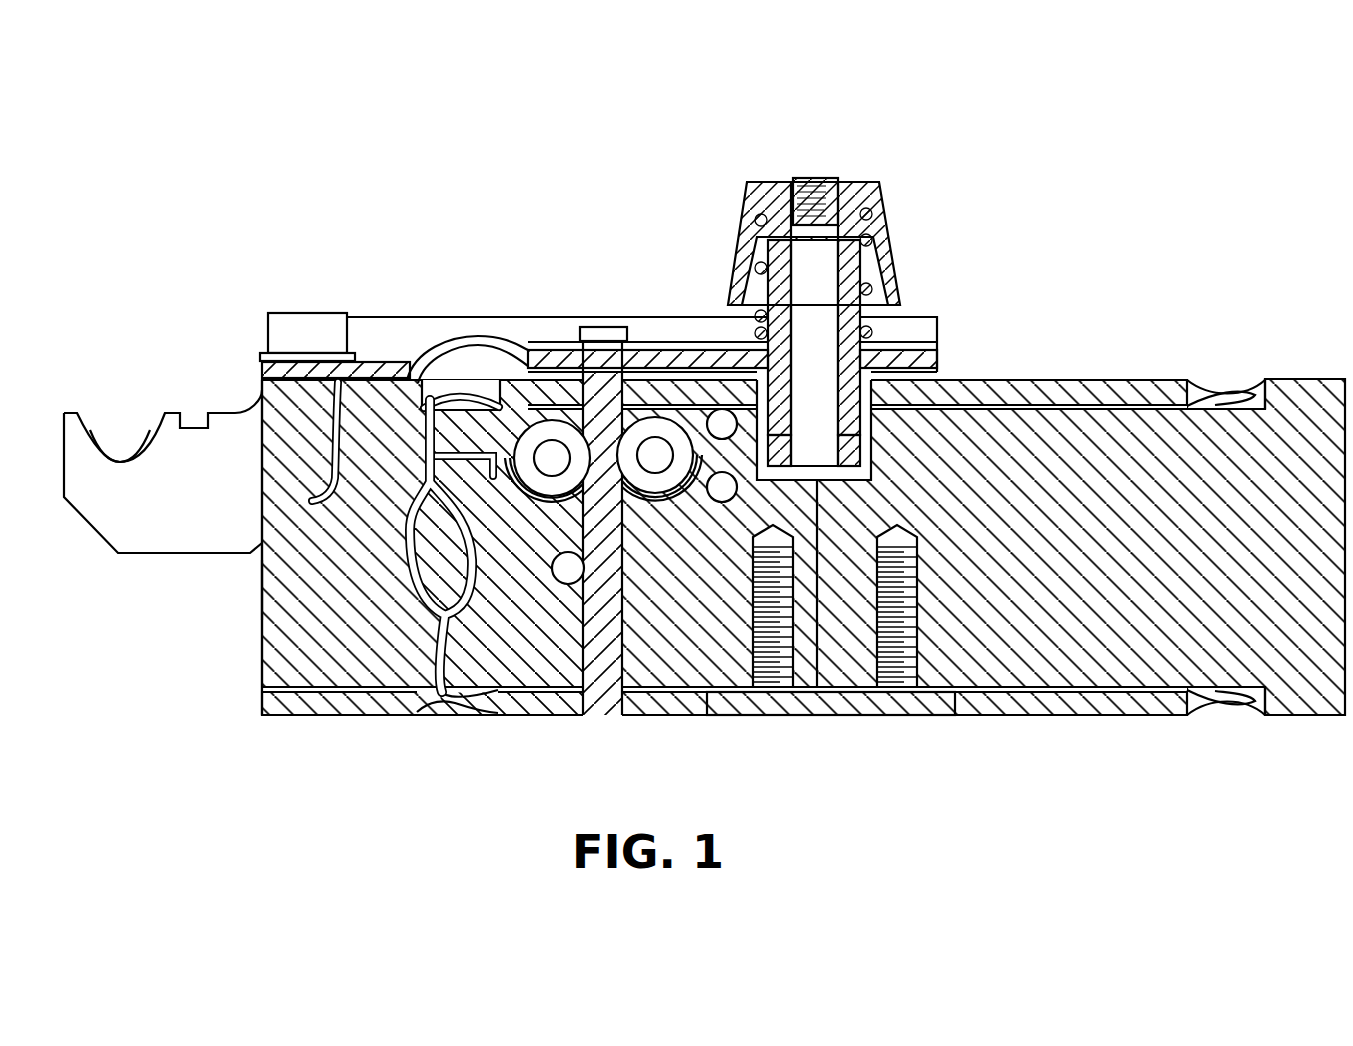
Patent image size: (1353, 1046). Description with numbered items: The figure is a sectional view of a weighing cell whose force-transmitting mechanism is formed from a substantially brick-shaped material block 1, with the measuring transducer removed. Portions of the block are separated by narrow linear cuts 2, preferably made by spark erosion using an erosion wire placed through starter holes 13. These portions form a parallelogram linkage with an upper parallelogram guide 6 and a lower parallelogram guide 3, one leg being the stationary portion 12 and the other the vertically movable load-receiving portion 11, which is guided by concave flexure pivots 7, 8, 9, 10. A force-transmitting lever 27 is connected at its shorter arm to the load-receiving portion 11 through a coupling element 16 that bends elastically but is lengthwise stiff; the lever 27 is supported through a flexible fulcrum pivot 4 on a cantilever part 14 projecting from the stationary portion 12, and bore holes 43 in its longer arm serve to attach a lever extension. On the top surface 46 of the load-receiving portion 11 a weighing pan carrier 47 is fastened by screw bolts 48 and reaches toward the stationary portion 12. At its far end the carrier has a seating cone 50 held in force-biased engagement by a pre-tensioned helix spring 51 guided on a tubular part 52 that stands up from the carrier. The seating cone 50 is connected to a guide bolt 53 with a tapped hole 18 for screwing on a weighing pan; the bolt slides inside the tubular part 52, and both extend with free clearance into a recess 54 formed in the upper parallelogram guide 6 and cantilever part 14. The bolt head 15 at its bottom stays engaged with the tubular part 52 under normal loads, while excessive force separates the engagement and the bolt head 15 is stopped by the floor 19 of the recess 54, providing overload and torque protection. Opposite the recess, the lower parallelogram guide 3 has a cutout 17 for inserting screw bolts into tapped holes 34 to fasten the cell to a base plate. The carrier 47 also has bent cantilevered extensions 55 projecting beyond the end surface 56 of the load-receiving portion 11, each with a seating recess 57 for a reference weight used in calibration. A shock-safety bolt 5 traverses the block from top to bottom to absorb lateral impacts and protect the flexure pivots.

The material block 1 is at (1110, 733).
The narrow linear cuts 2 is at (1083, 398).
The lower parallelogram guide 3 is at (1057, 703).
The flexible fulcrum pivot 4 is at (503, 452).
The shock-safety bolt 5 is at (604, 338).
The upper parallelogram guide 6 is at (1116, 404).
The flexure pivot 7 is at (455, 714).
The flexure pivot 8 is at (1225, 705).
The flexure pivot 9 is at (1238, 390).
The flexure pivot 10 is at (452, 392).
The load-receiving portion 11 is at (340, 630).
The stationary portion 12 is at (1303, 372).
The starter holes 13 is at (722, 422).
The cantilever part 14 is at (1130, 487).
The bolt head 15 is at (872, 476).
The coupling element 16 is at (430, 592).
The cutout 17 is at (855, 703).
The tapped hole 18 is at (818, 180).
The floor 19 is at (817, 716).
The force-transmitting lever 27 is at (483, 420).
The tapped holes 34 is at (777, 662).
The bore holes 43 is at (553, 455).
The top surface 46 is at (266, 371).
The weighing pan carrier 47 is at (401, 312).
The screw bolts 48 is at (300, 330).
The seating cone 50 is at (768, 180).
The helix spring 51 is at (840, 228).
The tubular part 52 is at (860, 262).
The guide bolt 53 is at (835, 195).
The recess 54 is at (862, 452).
The cantilevered extensions 55 is at (115, 527).
The end surface 56 is at (260, 588).
The seating recess 57 is at (120, 458).